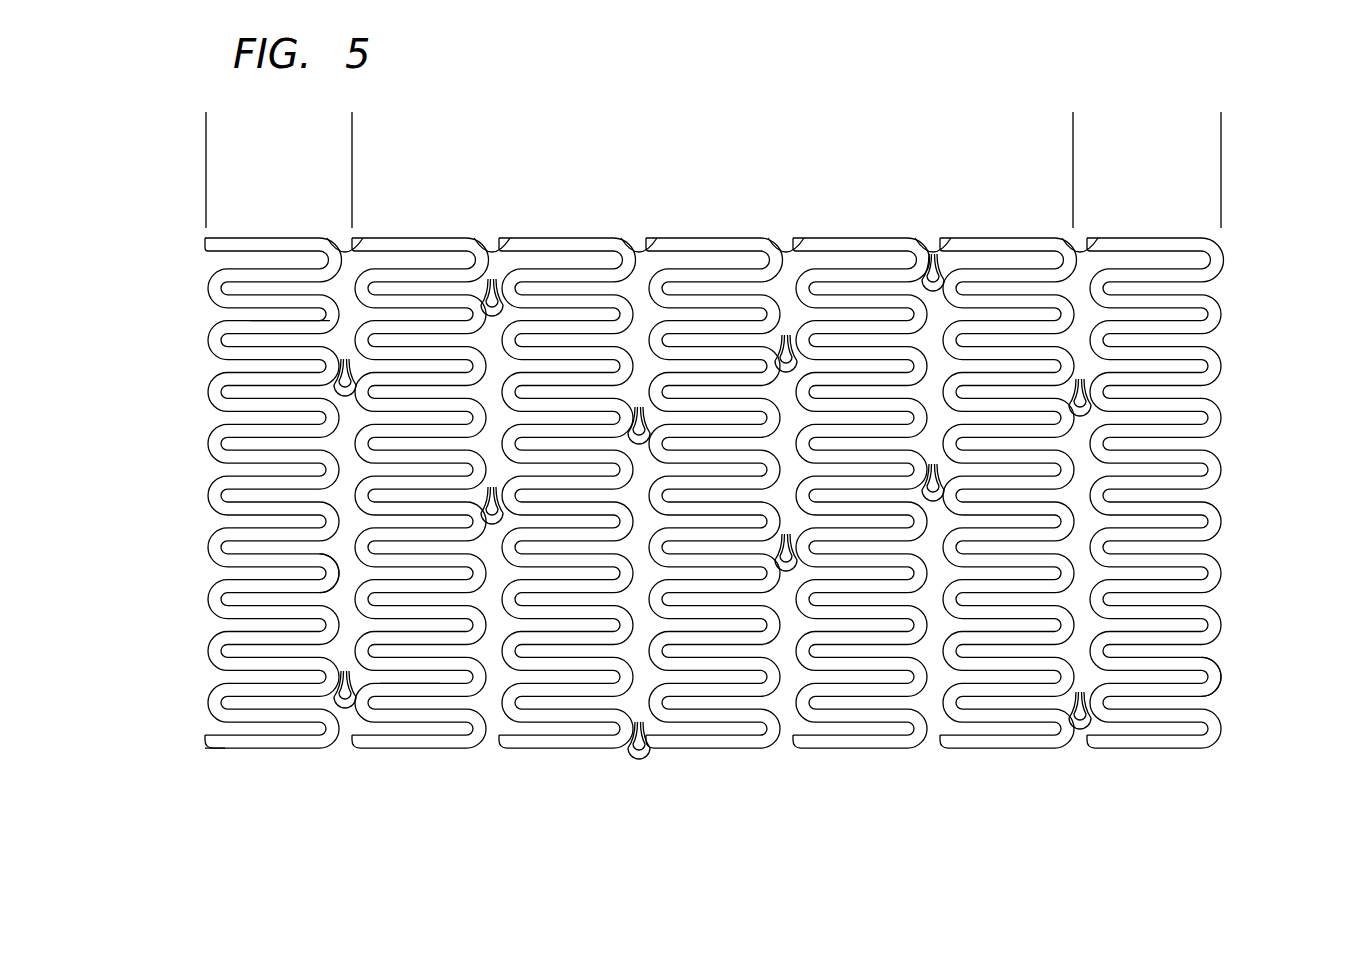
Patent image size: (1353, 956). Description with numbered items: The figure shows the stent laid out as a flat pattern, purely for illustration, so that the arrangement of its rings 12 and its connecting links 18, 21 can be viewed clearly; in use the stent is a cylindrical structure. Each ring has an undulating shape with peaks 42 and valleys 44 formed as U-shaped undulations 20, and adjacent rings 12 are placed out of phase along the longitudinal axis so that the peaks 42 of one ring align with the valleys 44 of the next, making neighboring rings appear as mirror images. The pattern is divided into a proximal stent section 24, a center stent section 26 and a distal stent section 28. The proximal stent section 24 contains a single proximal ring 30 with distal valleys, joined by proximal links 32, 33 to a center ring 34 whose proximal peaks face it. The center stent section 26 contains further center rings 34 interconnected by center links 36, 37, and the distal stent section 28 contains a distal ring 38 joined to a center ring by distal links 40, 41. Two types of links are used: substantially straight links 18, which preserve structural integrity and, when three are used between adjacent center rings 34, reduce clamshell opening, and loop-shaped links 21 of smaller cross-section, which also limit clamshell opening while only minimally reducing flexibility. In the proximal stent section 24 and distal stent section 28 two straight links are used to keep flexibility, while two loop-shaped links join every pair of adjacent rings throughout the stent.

The rings 12 is at (230, 742).
The link 18 is at (347, 262).
The U-shaped undulations 20 is at (1210, 678).
The link 21 is at (343, 705).
The proximal stent section 24 is at (206, 128).
The center stent section 26 is at (352, 128).
The distal stent section 28 is at (1073, 128).
The proximal ring 30 is at (215, 592).
The proximal link 32 is at (350, 575).
The proximal link 33 is at (340, 397).
The center ring 34 is at (383, 690).
The center link 36 is at (785, 440).
The center link 37 is at (787, 336).
The distal ring 38 is at (1205, 468).
The distal link 40 is at (1070, 597).
The distal link 41 is at (1077, 745).
The peaks 42 is at (372, 252).
The valleys 44 is at (330, 320).